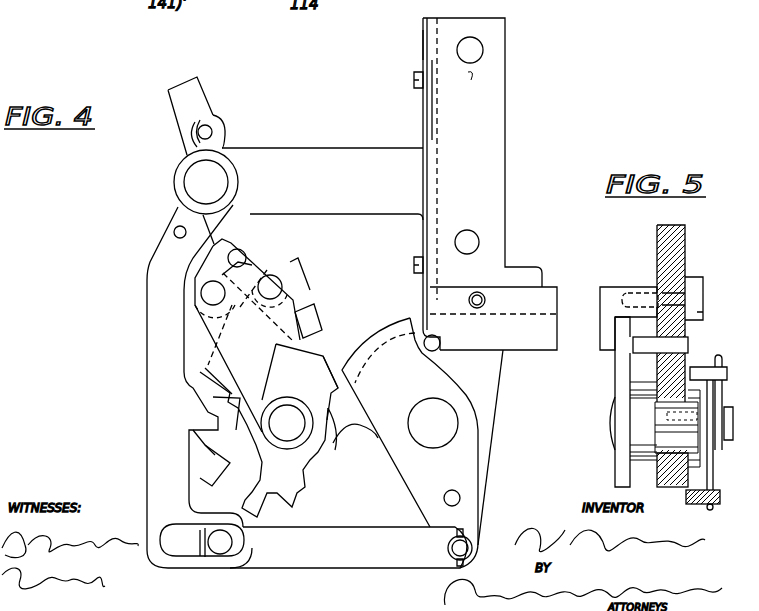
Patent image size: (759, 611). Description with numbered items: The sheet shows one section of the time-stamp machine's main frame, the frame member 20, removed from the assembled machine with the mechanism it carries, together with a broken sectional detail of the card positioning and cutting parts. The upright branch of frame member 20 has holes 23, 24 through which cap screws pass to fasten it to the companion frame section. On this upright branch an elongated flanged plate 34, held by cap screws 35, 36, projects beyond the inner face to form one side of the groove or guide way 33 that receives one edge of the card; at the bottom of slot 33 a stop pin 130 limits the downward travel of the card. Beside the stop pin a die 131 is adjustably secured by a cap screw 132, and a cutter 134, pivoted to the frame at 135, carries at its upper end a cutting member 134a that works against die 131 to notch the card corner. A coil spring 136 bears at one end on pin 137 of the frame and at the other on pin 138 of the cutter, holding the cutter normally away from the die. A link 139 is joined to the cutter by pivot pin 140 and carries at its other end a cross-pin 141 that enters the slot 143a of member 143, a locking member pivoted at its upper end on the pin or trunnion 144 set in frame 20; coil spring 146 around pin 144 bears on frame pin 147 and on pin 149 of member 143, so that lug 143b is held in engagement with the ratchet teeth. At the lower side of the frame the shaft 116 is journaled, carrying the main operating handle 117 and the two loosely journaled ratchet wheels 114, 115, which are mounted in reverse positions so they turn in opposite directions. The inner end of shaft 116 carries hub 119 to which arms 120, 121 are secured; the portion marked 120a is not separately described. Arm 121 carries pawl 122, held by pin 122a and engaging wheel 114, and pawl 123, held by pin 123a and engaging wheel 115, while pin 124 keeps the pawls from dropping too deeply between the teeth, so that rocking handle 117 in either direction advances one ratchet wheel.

In FIG. 4, the frame member 20 is at (503, 424).
In FIG. 5, the frame member 20 is at (686, 250).
In FIG. 4, the hole 23 is at (473, 50).
In FIG. 4, the hole 24 is at (470, 242).
In FIG. 4, the groove or guide way 33 is at (432, 105).
In FIG. 4, the elongated flanged plate 34 is at (425, 40).
In FIG. 4, the cap screw 35 is at (415, 78).
In FIG. 4, the cap screw 36 is at (415, 262).
In FIG. 4, the ratchet wheel 114 is at (264, 442).
In FIG. 4, the ratchet wheel 115 is at (228, 424).
In FIG. 4, the shaft 116 is at (300, 430).
In FIG. 4, the main operating handle 117 is at (184, 104).
In FIG. 4, the hub portion 119 is at (296, 446).
In FIG. 4, the arm 120 is at (300, 382).
In FIG. 4, the cam surface 120a is at (328, 358).
In FIG. 4, the arm 121 is at (250, 317).
In FIG. 4, the pawl 122 is at (218, 248).
In FIG. 4, the pin 122a is at (212, 294).
In FIG. 4, the pawl 123 is at (246, 256).
In FIG. 4, the pin 123a is at (273, 288).
In FIG. 4, the pin 124 is at (236, 250).
In FIG. 4, the stop pin 130 is at (438, 349).
In FIG. 5, the stop pin 130 is at (640, 350).
In FIG. 4, the die 131 is at (493, 318).
In FIG. 5, the die 131 is at (608, 297).
In FIG. 4, the cap screw 132 is at (476, 288).
In FIG. 5, the cap screw 132 is at (695, 292).
In FIG. 4, the cutter 134 is at (410, 443).
In FIG. 5, the cutter 134 is at (620, 468).
In FIG. 4, the cutting member 134a is at (395, 327).
In FIG. 5, the cutting member 134a is at (612, 346).
In FIG. 4, the pivot 135 is at (433, 423).
In FIG. 5, the pivot 135 is at (612, 430).
In FIG. 5, the coil spring 136 is at (718, 357).
In FIG. 5, the pin 137 is at (704, 370).
In FIG. 4, the pin 138 is at (460, 497).
In FIG. 5, the pin 138 is at (712, 490).
In FIG. 4, the link 139 is at (317, 547).
In FIG. 4, the pivot pin 140 is at (472, 550).
In FIG. 4, the cross-pin 141 is at (224, 550).
In FIG. 4, the member 143 is at (199, 386).
In FIG. 4, the slot 143a is at (180, 545).
In FIG. 4, the lug 143b is at (203, 403).
In FIG. 4, the pin or trunnion 144 is at (195, 183).
In FIG. 4, the coil spring 146 is at (196, 148).
In FIG. 4, the pin 147 is at (212, 133).
In FIG. 4, the pin 149 is at (174, 231).